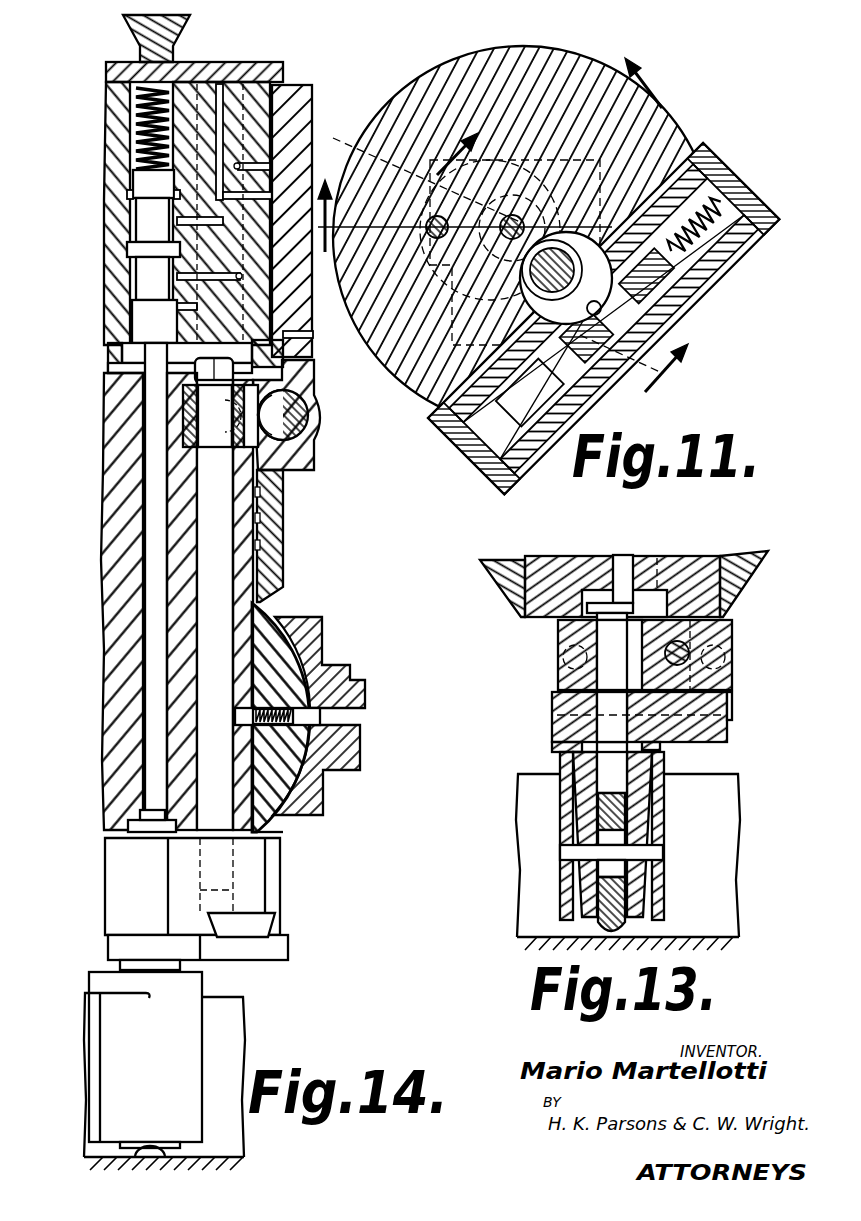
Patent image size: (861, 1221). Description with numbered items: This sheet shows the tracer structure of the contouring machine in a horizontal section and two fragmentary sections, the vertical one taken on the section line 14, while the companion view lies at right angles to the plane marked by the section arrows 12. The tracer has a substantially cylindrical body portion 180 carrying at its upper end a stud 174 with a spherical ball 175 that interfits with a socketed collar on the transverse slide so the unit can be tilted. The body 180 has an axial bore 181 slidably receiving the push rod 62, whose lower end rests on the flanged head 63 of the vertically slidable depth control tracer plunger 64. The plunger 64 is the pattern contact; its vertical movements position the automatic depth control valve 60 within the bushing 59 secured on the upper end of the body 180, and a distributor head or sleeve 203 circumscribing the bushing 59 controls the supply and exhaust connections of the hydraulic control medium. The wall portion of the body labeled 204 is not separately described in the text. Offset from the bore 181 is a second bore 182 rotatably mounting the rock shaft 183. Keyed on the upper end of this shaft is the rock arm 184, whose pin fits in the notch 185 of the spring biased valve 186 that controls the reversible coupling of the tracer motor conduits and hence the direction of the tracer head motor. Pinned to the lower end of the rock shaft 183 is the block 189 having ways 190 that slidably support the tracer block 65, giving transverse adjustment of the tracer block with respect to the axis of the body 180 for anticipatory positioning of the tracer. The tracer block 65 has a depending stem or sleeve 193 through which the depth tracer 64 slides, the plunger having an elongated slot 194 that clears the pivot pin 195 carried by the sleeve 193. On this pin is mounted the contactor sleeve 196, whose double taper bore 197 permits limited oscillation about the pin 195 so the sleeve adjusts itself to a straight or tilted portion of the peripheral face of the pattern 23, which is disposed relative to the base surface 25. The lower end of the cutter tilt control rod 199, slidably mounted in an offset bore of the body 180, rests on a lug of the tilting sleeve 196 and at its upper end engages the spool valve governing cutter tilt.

In FIG. 11, the section line 12- 12 is at (500, 172).
In FIG. 11, the section line 14- 14 is at (514, 267).
In FIG. 14, the pattern 23 is at (240, 1040).
In FIG. 13, the pattern 23 is at (741, 873).
In FIG. 13, the base surface 25 is at (650, 937).
In FIG. 14, the bushing 59 is at (106, 112).
In FIG. 14, the automatic depth control valve 60 is at (140, 186).
In FIG. 14, the push rod 62 is at (150, 530).
In FIG. 11, the push rod 62 is at (470, 262).
In FIG. 13, the push rod 62 is at (623, 555).
In FIG. 14, the flanged head 63 is at (126, 823).
In FIG. 11, the depth control tracer plunger 64 is at (352, 148).
In FIG. 13, the depth control tracer plunger 64 is at (605, 761).
In FIG. 14, the tracer block 65 is at (243, 961).
In FIG. 13, the tracer block 65 is at (708, 742).
In FIG. 14, the stud 174 is at (174, 53).
In FIG. 14, the spherical ball 175 is at (188, 24).
In FIG. 14, the tracer body portion 180 is at (313, 462).
In FIG. 11, the tracer body portion 180 is at (560, 53).
In FIG. 13, the tracer body portion 180 is at (550, 558).
In FIG. 14, the axial bore 181 is at (170, 551).
In FIG. 14, the second bore 182 is at (240, 822).
In FIG. 14, the rock shaft 183 is at (224, 673).
In FIG. 11, the rock shaft 183 is at (432, 362).
In FIG. 13, the rock shaft 183 is at (694, 556).
In FIG. 14, the rock arm 184 is at (190, 415).
In FIG. 11, the rock arm 184 is at (592, 270).
In FIG. 11, the notch 185 is at (575, 307).
In FIG. 14, the spring biased valve 186 is at (296, 425).
In FIG. 11, the spring biased valve 186 is at (724, 170).
In FIG. 14, the block 189 is at (281, 888).
In FIG. 13, the block 189 is at (733, 650).
In FIG. 14, the ways 190 is at (274, 924).
In FIG. 13, the ways 190 is at (733, 710).
In FIG. 13, the stem or sleeve 193 is at (648, 927).
In FIG. 13, the elongated slot 194 is at (607, 870).
In FIG. 13, the pivot pin 195 is at (563, 852).
In FIG. 14, the contactor sleeve 196 is at (100, 1025).
In FIG. 13, the contactor sleeve 196 is at (561, 819).
In FIG. 13, the double taper bore 197 is at (565, 789).
In FIG. 11, the cutter tilt control rod 199 is at (440, 255).
In FIG. 14, the distributor head or sleeve 203 is at (300, 88).
In FIG. 14, the body wall 204 is at (108, 290).